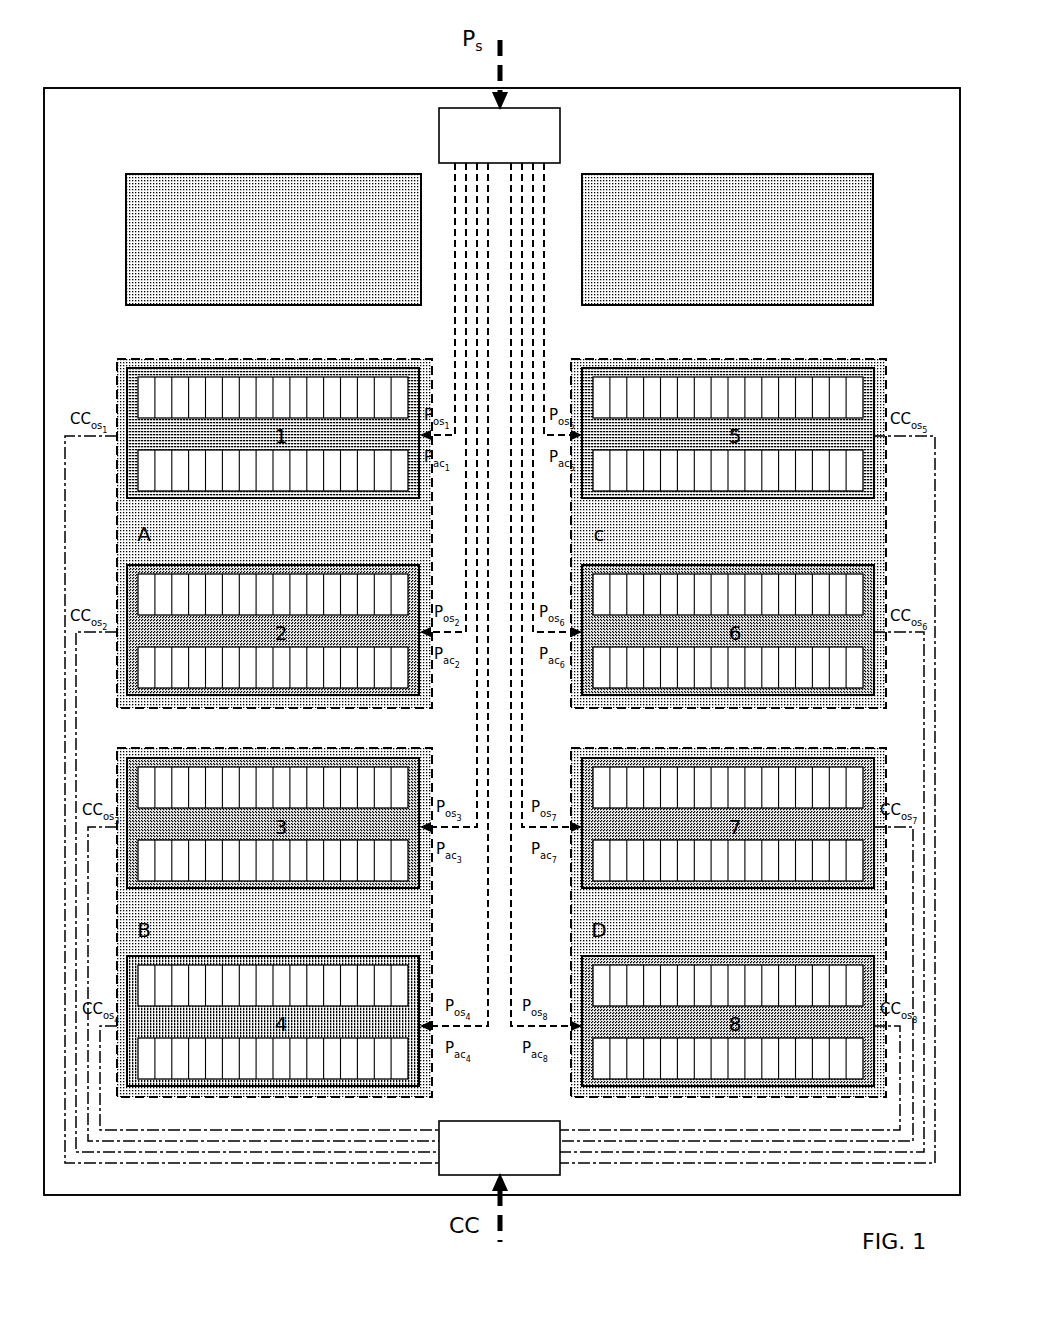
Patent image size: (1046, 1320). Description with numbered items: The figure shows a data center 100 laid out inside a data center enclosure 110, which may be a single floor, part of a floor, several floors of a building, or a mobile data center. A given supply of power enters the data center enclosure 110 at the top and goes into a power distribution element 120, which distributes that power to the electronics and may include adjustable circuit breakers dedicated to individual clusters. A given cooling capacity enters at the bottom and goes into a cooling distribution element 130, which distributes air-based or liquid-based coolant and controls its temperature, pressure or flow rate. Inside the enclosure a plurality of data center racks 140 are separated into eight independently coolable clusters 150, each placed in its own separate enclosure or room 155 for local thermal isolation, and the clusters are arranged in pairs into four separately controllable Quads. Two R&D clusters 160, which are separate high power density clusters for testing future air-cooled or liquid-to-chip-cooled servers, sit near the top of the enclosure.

The data center 100 is at (167, 61).
The data center enclosure 110 is at (879, 108).
The power distribution element 120 is at (499, 135).
The cooling distribution element 130 is at (499, 1148).
The data center rack 140 is at (127, 1073).
The independently coolable cluster 150 is at (202, 331).
The enclosure or room 155 is at (462, 780).
The R&D cluster 160 is at (278, 188).